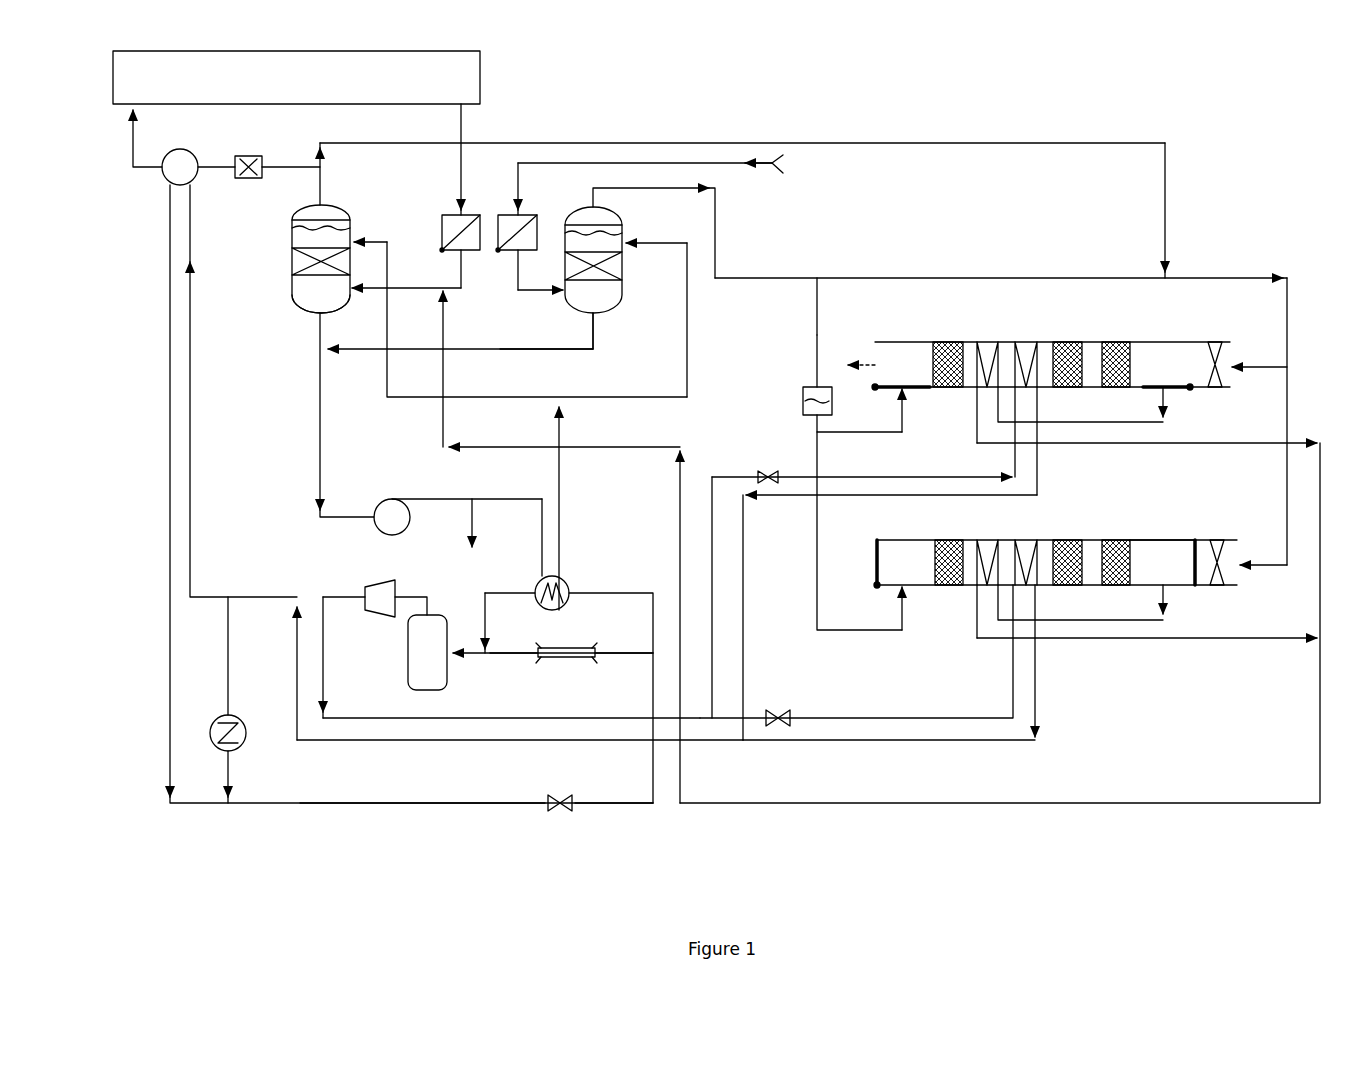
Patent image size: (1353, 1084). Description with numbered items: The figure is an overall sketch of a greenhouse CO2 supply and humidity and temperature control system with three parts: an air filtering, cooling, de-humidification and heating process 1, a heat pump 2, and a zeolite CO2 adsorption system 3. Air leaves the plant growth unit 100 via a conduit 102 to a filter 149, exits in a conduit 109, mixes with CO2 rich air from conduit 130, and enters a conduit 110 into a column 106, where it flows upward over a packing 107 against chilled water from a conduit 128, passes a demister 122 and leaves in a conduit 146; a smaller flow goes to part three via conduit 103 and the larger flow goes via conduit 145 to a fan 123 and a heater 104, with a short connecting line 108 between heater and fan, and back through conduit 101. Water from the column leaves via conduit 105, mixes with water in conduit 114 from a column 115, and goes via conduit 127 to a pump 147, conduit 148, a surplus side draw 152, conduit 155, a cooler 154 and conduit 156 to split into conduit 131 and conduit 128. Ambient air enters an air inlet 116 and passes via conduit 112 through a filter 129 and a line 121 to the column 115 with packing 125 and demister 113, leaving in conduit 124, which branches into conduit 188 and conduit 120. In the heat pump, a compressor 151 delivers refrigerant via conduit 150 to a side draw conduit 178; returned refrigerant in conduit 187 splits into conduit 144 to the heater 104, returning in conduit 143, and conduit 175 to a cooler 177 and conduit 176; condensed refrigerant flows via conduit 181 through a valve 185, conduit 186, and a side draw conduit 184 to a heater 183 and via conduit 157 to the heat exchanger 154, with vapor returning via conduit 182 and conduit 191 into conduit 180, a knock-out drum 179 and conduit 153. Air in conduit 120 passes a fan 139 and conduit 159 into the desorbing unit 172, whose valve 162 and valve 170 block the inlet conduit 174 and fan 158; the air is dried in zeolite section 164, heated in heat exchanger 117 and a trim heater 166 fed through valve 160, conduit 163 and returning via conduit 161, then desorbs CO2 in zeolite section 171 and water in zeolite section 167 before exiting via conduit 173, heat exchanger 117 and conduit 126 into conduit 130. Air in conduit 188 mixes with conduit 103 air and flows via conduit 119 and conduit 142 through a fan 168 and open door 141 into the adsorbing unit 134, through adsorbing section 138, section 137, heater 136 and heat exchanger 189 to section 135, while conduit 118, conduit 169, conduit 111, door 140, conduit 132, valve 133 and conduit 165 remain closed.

The air filtering, cooling, de-humidification and heating process 1 is at (632, 97).
The heat pump 2 is at (470, 820).
The CO2 adsorption system 3 is at (1043, 122).
The closed or semi-closed system for plant growth 100 is at (484, 58).
The conduit 101 is at (132, 150).
The conduit 102 is at (460, 135).
The conduit 103 is at (540, 142).
The heater 104 is at (166, 151).
The conduit 105 is at (325, 350).
The cooling and de-humidification column 106 is at (292, 300).
The packing 107 is at (292, 268).
The line 108 is at (203, 170).
The conduit 109 is at (460, 300).
The conduit 110 is at (405, 290).
The conduit 111 is at (1155, 445).
The conduit 112 is at (516, 195).
The demister 113 is at (625, 230).
The conduit 114 is at (522, 348).
The column 115 is at (615, 312).
The air inlet 116 is at (772, 180).
The heat exchanger 117 is at (982, 540).
The conduit 118 is at (875, 435).
The conduit 119 is at (1245, 278).
The conduit 120 is at (815, 360).
The line 121 is at (512, 270).
The demister 122 is at (352, 232).
The fan 123 is at (240, 155).
The conduit 124 is at (815, 290).
The packing 125 is at (628, 265).
The conduit 126 is at (1125, 640).
The conduit 127 is at (320, 415).
The conduit 128 is at (408, 398).
The filter 129 is at (535, 215).
The conduit 130 is at (447, 440).
The conduit 131 is at (615, 400).
The conduit 132 is at (715, 475).
The valve 133 is at (768, 470).
The unit 134 is at (885, 342).
The section 135 is at (948, 342).
The heater 136 is at (1020, 342).
The section 137 is at (1065, 342).
The adsorbing section 138 is at (1112, 342).
The fan 139 is at (803, 392).
The door 140 is at (885, 385).
The door 141 is at (1158, 385).
The conduit 142 is at (1258, 366).
The conduit 143 is at (168, 500).
The conduit 144 is at (192, 515).
The conduit 145 is at (300, 172).
The conduit 146 is at (323, 180).
The pump 147 is at (380, 505).
The conduit 148 is at (430, 499).
The filter 149 is at (440, 249).
The conduit 150 is at (348, 595).
The compressor 151 is at (393, 582).
The conduit 152 is at (470, 535).
The conduit 153 is at (430, 600).
The cooler 154 is at (538, 580).
The conduit 155 is at (540, 515).
The conduit 156 is at (562, 525).
The conduit 157 is at (585, 593).
The fan 158 is at (1222, 540).
The conduit 159 is at (815, 555).
The valve 160 is at (772, 710).
The conduit 161 is at (902, 743).
The valve 162 is at (880, 550).
The conduit 163 is at (870, 718).
The zeolite section 164 is at (935, 588).
The conduit 165 is at (1040, 455).
The trim heater 166 is at (1027, 540).
The zeolite section 167 is at (1110, 540).
The fan 168 is at (1215, 340).
The conduit 169 is at (1120, 422).
The valve 170 is at (1193, 568).
The zeolite section 171 is at (1065, 540).
The unit 172 is at (1163, 540).
The conduit 173 is at (1095, 620).
The inlet air conduit 174 is at (1287, 570).
The conduit 175 is at (226, 665).
The conduit 176 is at (224, 770).
The cooler 177 is at (240, 750).
The conduit 178 is at (340, 717).
The liquid knock-out drum 179 is at (408, 660).
The conduit 180 is at (458, 656).
The conduit 181 is at (440, 802).
The conduit 182 is at (510, 656).
The heater 183 is at (562, 660).
The side draw conduit 184 is at (612, 656).
The valve 185 is at (550, 800).
The conduit 186 is at (635, 800).
The conduit 187 is at (330, 742).
The conduit 188 is at (885, 278).
The heat exchanger 189 is at (983, 342).
The conduit 191 is at (490, 640).